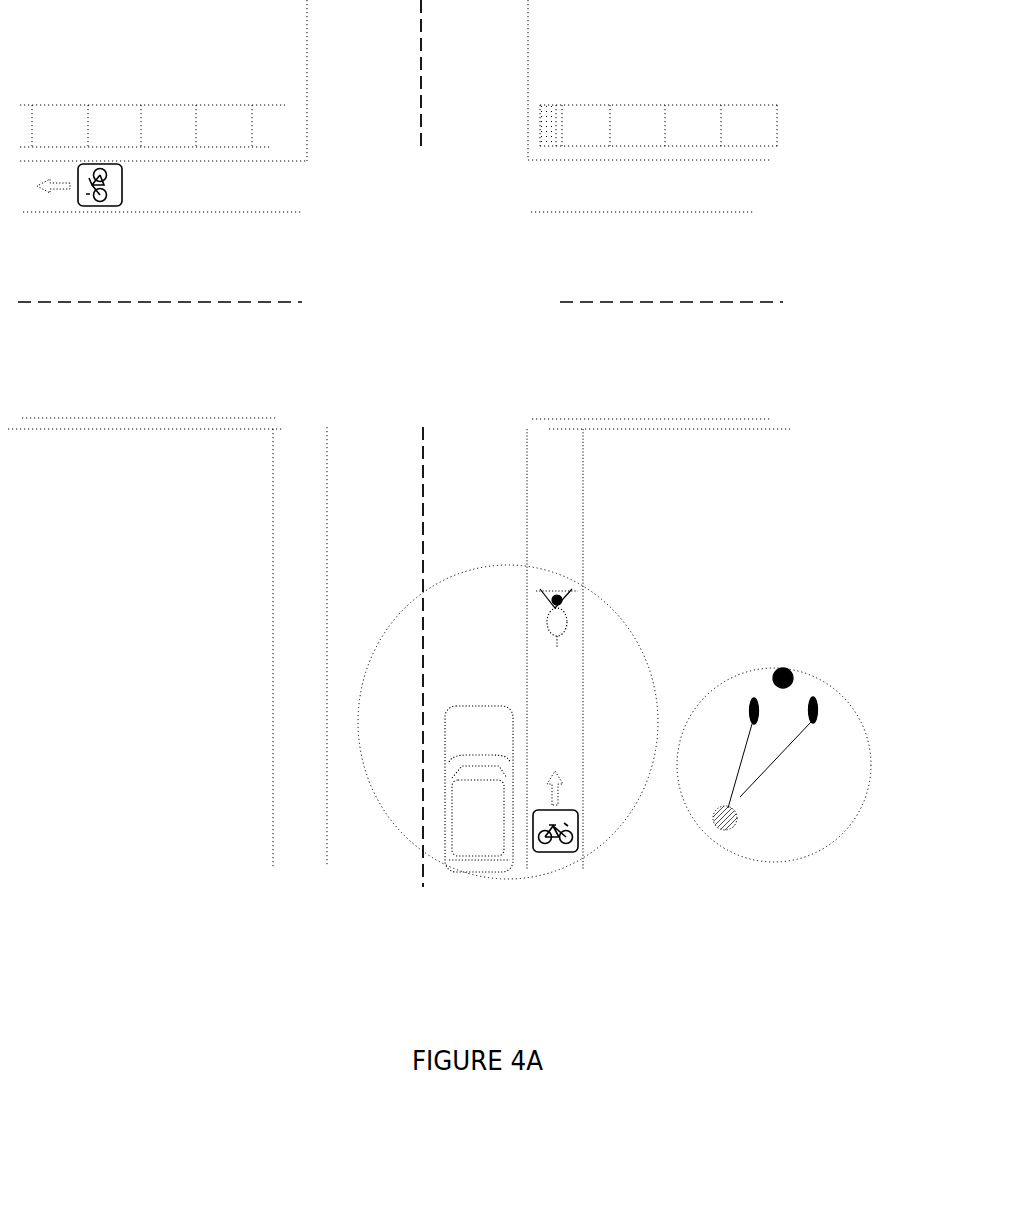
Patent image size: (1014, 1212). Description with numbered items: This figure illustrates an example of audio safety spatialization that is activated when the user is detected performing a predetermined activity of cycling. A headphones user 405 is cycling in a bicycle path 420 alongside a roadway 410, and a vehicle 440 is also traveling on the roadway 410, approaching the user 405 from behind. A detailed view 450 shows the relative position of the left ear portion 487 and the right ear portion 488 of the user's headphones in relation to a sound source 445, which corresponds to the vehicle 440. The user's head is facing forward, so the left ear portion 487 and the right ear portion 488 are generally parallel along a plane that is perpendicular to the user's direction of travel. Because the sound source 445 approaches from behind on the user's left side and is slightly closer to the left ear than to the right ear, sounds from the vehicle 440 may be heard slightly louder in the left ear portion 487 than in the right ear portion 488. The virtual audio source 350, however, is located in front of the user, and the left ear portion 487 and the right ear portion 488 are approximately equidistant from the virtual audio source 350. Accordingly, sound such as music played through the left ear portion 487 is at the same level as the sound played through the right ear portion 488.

The virtual audio source 350 is at (783, 667).
The headphones user 405 is at (574, 605).
The roadway 410 is at (495, 497).
The bicycle path 420 is at (553, 735).
The vehicle 440 is at (482, 828).
The sound source 445 is at (716, 825).
The detailed view 450 is at (830, 848).
The left ear portion 487 is at (754, 698).
The right ear portion 488 is at (814, 697).